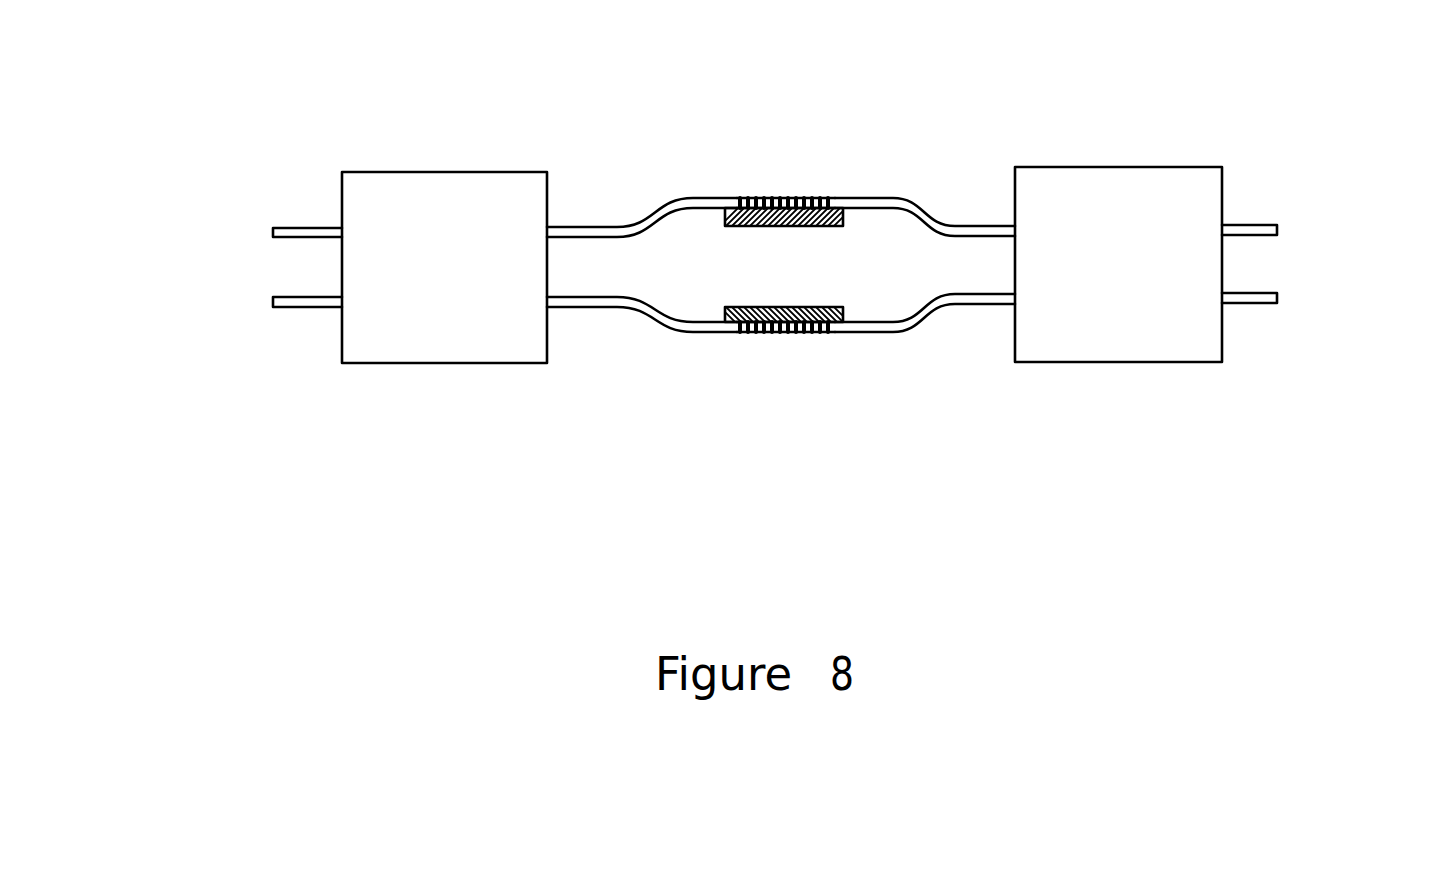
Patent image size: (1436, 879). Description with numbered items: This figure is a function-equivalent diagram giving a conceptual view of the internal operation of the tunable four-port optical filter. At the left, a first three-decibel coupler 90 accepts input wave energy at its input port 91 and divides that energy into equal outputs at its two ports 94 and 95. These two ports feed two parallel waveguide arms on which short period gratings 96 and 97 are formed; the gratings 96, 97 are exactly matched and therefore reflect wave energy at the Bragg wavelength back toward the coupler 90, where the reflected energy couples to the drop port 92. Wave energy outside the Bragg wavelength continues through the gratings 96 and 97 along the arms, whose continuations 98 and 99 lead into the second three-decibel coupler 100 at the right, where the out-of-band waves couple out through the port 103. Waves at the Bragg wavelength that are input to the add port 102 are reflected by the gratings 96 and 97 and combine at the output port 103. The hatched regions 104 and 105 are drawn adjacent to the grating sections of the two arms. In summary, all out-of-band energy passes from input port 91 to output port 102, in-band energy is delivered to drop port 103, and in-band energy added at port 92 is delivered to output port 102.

The 3 db coupler 90 is at (402, 199).
The input port 91 is at (220, 182).
The drop port 92 is at (220, 341).
The port 94 is at (642, 161).
The port 95 is at (642, 352).
The short period grating 96 is at (828, 152).
The short period grating 97 is at (827, 373).
The upper waveguide arm output section 98 is at (964, 167).
The lower waveguide arm output section 99 is at (961, 355).
The 3 db coupler 100 is at (1167, 203).
The add port 102 is at (1323, 201).
The drop port 103 is at (1323, 333).
The lower tuning electrode 104 is at (711, 258).
The upper tuning electrode 105 is at (830, 274).